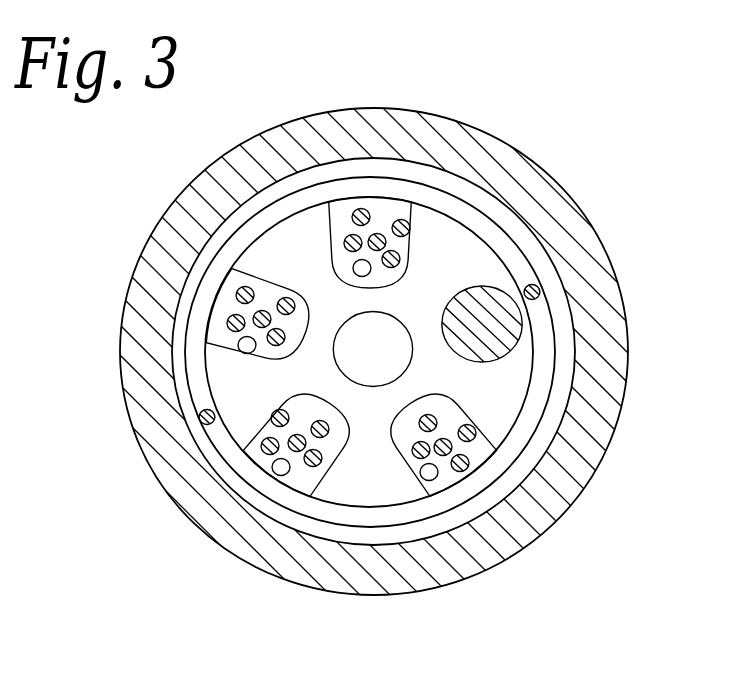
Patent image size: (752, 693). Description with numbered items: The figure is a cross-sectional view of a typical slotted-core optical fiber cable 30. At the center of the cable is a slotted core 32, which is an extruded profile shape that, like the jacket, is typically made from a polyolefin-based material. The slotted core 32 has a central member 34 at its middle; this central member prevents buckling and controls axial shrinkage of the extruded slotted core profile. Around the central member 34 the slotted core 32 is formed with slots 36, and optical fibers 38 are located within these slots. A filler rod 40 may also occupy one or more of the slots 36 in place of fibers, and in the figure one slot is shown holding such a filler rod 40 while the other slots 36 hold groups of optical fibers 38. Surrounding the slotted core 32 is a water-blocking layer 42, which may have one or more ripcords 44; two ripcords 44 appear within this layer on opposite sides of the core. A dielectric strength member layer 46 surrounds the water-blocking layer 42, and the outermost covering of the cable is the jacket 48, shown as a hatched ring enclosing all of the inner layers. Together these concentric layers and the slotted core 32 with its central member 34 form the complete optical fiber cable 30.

The optical fiber cable 30 is at (376, 346).
The slotted core 32 is at (433, 250).
The central member 34 is at (385, 348).
The slots 36 is at (483, 449).
The optical fibers 38 is at (462, 466).
The filler rod 40 is at (472, 312).
The water-blocking layer 42 is at (428, 510).
The ripcord 44 is at (200, 421).
The dielectric strength member layer 46 is at (363, 540).
The jacket 48 is at (236, 538).